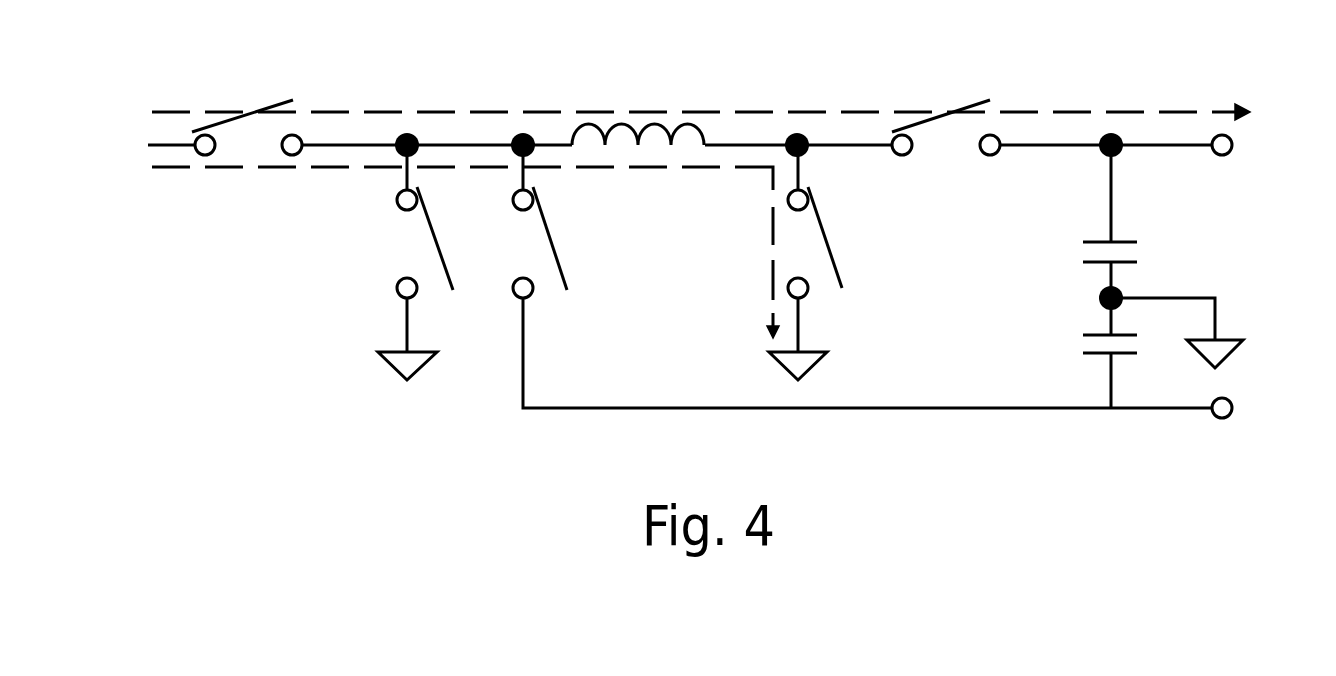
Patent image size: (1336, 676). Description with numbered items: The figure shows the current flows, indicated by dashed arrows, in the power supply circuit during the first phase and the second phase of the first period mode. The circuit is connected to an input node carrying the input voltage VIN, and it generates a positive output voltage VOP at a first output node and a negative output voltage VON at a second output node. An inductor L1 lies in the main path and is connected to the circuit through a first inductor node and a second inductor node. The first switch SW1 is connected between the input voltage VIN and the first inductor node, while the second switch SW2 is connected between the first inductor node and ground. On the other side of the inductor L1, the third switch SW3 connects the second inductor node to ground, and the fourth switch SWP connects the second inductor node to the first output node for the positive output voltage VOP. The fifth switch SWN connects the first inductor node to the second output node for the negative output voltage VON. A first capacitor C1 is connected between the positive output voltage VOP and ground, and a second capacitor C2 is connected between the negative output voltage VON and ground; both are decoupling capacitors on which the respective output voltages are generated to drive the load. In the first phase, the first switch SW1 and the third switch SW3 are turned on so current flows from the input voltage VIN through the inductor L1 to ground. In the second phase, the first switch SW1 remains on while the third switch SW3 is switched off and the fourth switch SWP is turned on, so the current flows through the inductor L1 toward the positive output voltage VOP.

The input voltage VIN is at (151, 144).
The first switch SW1 is at (247, 106).
The inductor L1 is at (638, 109).
The fourth switch SWP is at (946, 111).
The positive output voltage VOP is at (1260, 144).
The second switch SW2 is at (390, 283).
The fifth switch SWN is at (575, 242).
The third switch SW3 is at (844, 283).
The first capacitor C1 is at (1081, 249).
The second capacitor C2 is at (1081, 342).
The negative output voltage VON is at (1262, 411).